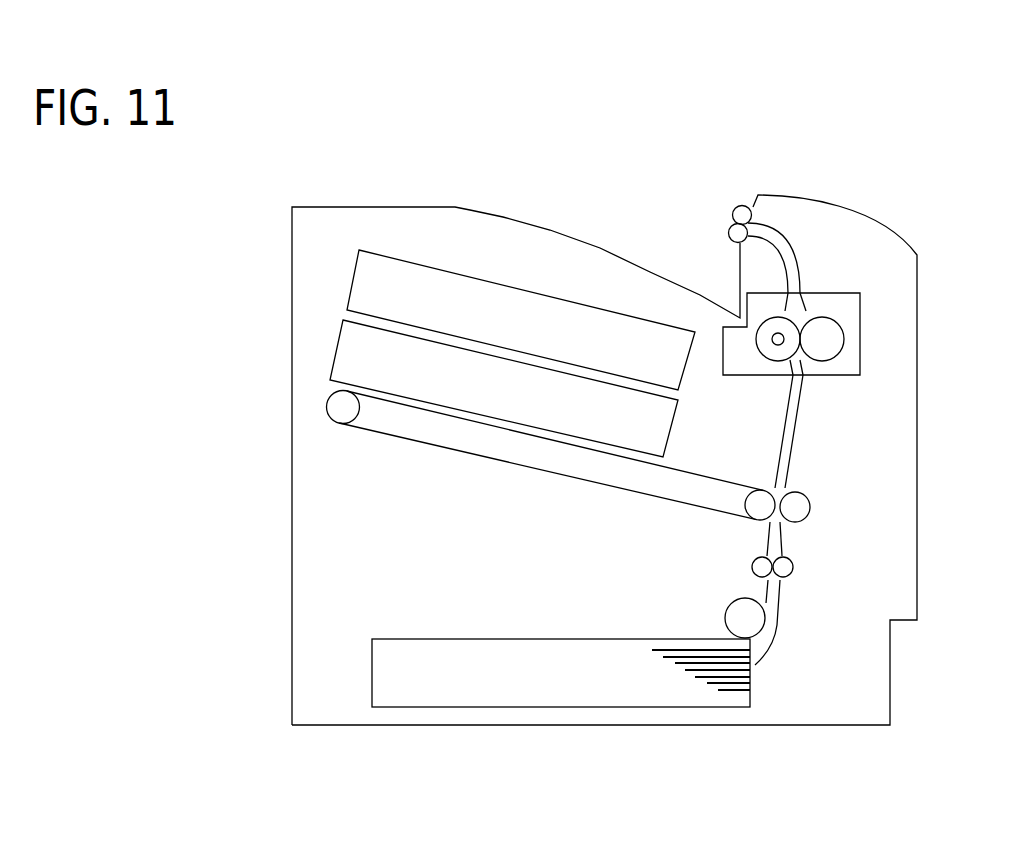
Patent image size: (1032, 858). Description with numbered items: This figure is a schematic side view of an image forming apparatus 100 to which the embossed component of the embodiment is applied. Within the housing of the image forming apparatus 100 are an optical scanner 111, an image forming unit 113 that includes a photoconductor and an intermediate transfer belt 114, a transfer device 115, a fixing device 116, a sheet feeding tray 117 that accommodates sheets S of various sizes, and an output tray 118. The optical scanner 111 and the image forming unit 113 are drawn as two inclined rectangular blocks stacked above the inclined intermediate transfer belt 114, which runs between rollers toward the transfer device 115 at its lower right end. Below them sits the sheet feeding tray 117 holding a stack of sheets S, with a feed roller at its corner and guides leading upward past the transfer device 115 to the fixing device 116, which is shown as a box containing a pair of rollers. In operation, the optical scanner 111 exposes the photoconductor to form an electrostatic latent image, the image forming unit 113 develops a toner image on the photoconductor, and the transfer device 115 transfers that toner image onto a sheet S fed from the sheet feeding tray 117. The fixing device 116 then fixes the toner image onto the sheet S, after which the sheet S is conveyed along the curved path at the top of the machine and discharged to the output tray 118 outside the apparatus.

The image forming apparatus 100 is at (697, 113).
The optical scanner 111 is at (350, 277).
The image forming unit 113 is at (330, 347).
The intermediate transfer belt 114 is at (613, 488).
The transfer device 115 is at (765, 478).
The fixing device 116 is at (837, 288).
The sheet feeding tray 117 is at (620, 708).
The output tray 118 is at (557, 230).
The sheet S is at (675, 643).